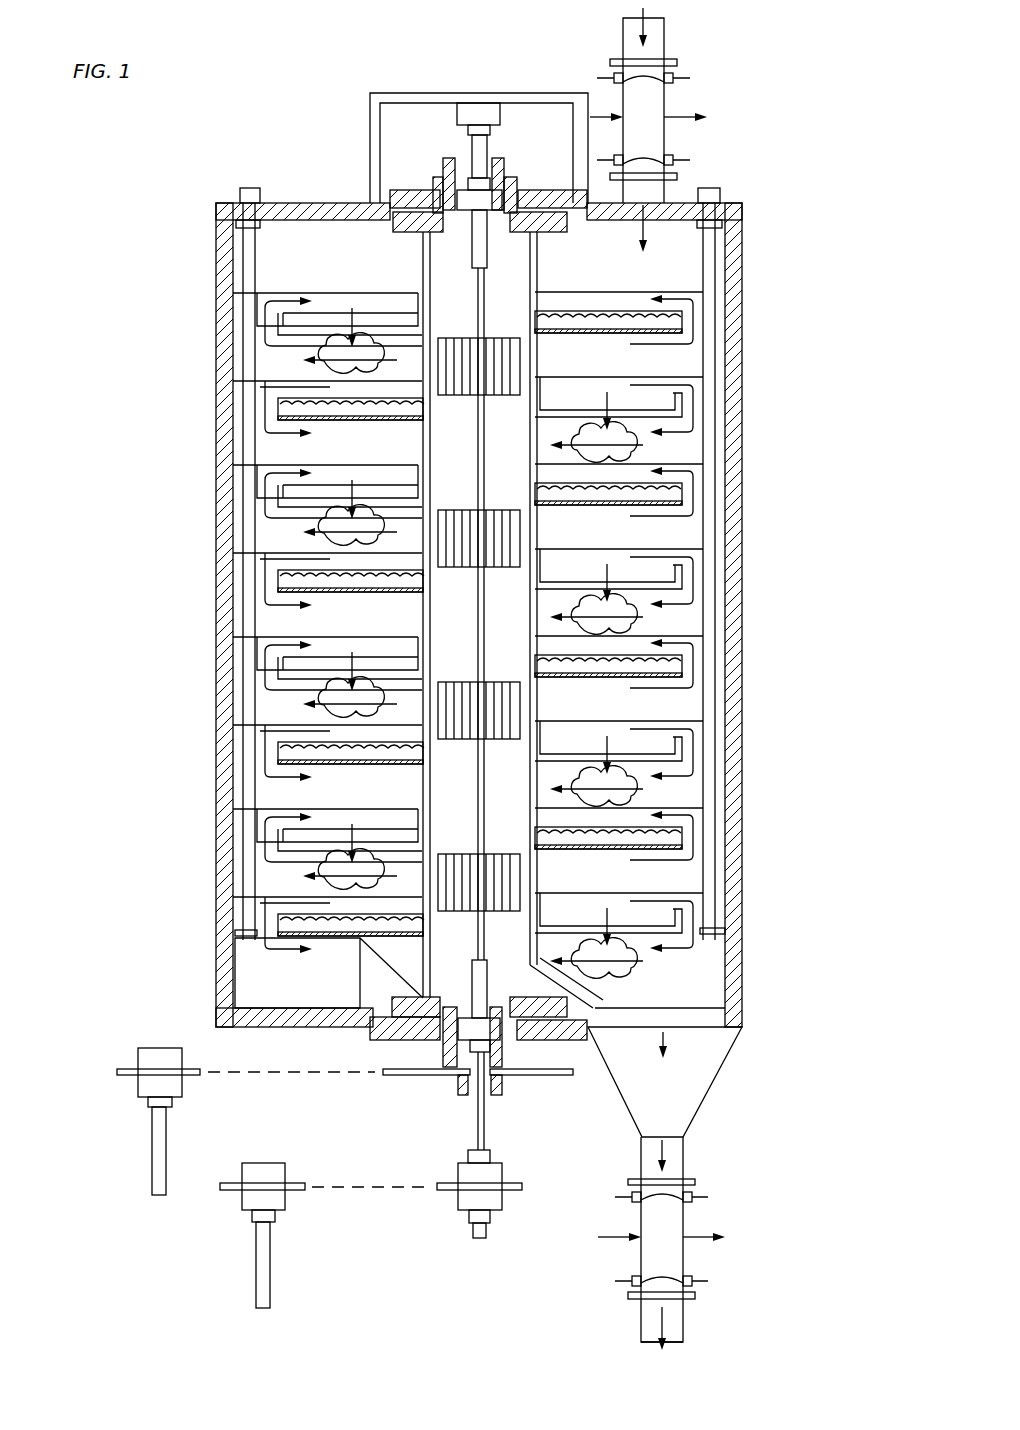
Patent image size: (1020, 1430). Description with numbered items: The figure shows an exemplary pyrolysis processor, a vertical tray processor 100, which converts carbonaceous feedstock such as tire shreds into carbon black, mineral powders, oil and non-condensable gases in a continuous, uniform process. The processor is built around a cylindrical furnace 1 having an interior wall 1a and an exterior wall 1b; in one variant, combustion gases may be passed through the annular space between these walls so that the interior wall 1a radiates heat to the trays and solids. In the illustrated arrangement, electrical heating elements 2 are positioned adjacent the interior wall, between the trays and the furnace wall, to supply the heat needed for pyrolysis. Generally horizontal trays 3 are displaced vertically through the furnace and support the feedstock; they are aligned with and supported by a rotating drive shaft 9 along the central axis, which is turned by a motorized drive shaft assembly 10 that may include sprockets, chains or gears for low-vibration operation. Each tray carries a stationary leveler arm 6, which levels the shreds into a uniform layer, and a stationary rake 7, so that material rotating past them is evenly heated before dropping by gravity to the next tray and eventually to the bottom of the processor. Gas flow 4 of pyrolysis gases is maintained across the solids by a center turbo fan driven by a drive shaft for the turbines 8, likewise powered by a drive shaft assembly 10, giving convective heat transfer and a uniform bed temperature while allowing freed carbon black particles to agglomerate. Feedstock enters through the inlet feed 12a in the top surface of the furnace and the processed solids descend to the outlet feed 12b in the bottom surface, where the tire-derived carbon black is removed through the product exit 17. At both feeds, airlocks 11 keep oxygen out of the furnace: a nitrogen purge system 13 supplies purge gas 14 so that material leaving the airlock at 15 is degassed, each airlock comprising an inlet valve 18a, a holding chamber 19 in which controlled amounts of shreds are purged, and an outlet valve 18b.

The vertical tray processor 100 is at (156, 320).
The cylindrical furnace 1 is at (322, 203).
The interior wall 1a is at (238, 497).
The exterior wall 1b is at (216, 583).
The heating elements 2 is at (252, 188).
The trays 3 is at (290, 388).
The gas flow 4 is at (335, 537).
The stationary leveler arm 6 is at (275, 723).
The stationary rake 7 is at (283, 808).
The drive shaft for the turbines 8 is at (458, 1203).
The rotating drive shaft 9 is at (478, 937).
The motorized drive shaft assembly 10 is at (160, 1196).
The airlocks 11 is at (613, 60).
The inlet feed 12a is at (636, 20).
The outlet feed 12b is at (653, 1137).
The nitrogen purge system 13 is at (592, 117).
The purge gas 14 is at (678, 117).
The material leaving the airlock 15 is at (650, 230).
The product exit 17 is at (650, 1342).
The inlet valve 18a is at (650, 75).
The outlet valve 18b is at (645, 155).
The holding chamber 19 is at (651, 123).